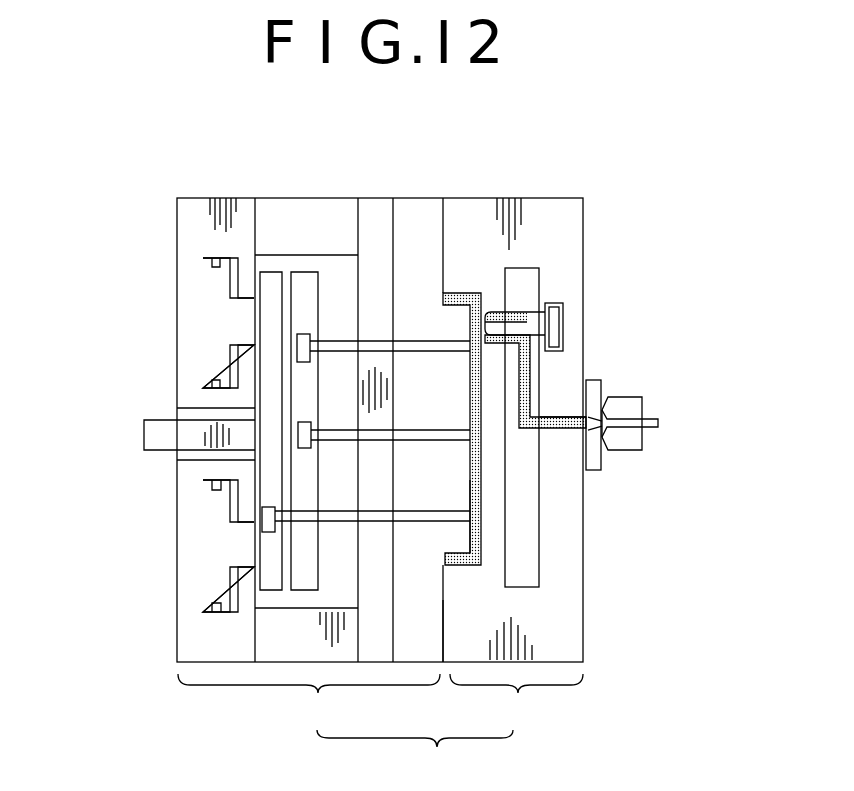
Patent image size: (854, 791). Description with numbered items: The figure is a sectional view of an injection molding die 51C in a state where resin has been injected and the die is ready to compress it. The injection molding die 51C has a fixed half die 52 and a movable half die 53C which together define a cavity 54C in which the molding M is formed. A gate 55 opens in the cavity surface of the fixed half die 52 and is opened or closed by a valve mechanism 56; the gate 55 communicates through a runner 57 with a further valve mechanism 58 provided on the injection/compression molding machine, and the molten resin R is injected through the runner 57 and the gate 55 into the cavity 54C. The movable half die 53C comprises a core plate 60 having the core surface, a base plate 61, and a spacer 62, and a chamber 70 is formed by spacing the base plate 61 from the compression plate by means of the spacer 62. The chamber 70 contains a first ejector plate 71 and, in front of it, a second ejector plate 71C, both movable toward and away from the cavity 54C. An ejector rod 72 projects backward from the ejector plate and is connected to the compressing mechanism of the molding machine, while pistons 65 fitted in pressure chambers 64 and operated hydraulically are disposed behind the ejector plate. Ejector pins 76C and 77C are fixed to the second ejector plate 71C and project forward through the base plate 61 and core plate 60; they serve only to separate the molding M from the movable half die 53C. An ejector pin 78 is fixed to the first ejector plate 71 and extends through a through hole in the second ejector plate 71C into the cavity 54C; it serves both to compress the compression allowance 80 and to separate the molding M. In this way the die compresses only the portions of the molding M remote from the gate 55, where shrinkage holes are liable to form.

The chamber 70 is at (323, 263).
The spacer 62 is at (323, 215).
The base plate 61 is at (373, 215).
The core plate 60 is at (417, 213).
The molding M is at (458, 288).
The gate 55 is at (485, 310).
The valve mechanism 56 is at (549, 292).
The runner 57 is at (527, 388).
The valve mechanism 58 is at (648, 405).
The molten resin R is at (558, 432).
The compression allowance 80 is at (482, 512).
The cavity 54C is at (463, 567).
The fixed half die 52 is at (516, 501).
The movable half die 53C is at (309, 704).
The injection molding die 51C is at (415, 755).
The first ejector plate 71 is at (268, 580).
The second ejector plate 71C is at (303, 583).
The ejector pin 76C is at (431, 352).
The ejector pin 77C is at (431, 442).
The ejector pin 78 is at (422, 518).
The pressure chambers 64 is at (238, 258).
The pistons 65 is at (212, 332).
The ejector rod 72 is at (155, 436).